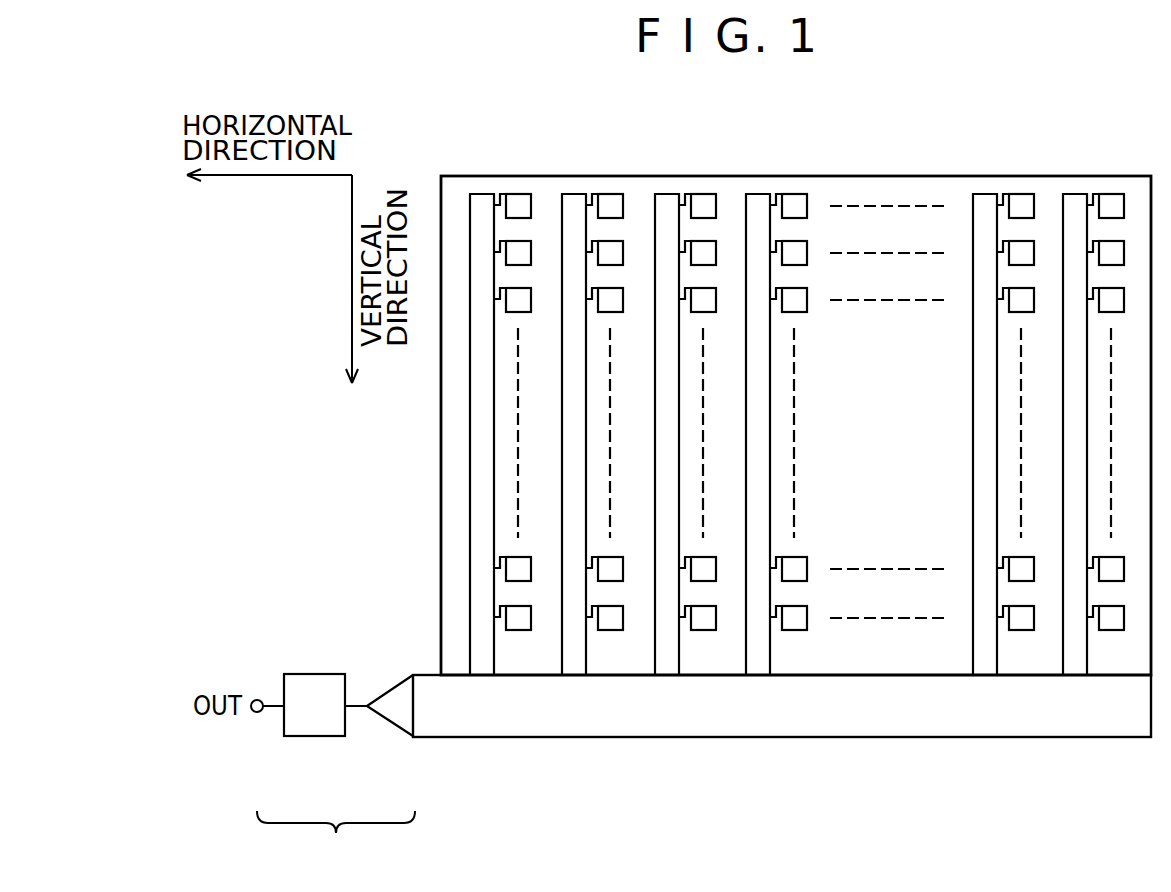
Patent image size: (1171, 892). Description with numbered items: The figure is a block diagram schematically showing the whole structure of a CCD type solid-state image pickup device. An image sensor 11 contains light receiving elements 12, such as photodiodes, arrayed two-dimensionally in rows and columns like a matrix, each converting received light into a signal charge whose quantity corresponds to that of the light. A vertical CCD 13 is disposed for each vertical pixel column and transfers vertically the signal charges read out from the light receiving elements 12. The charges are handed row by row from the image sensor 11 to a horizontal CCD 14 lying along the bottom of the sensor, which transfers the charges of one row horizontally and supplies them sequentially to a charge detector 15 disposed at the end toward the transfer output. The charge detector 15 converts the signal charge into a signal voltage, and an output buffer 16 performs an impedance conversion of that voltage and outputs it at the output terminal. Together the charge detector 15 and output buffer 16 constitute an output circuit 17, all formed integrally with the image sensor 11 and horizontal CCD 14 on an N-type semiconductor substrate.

The image sensor 11 is at (895, 383).
The light receiving element 12 is at (520, 200).
The vertical CCD 13 is at (985, 200).
The horizontal CCD 14 is at (870, 720).
The charge detector 15 is at (393, 713).
The output buffer 16 is at (308, 672).
The output circuit 17 is at (336, 842).